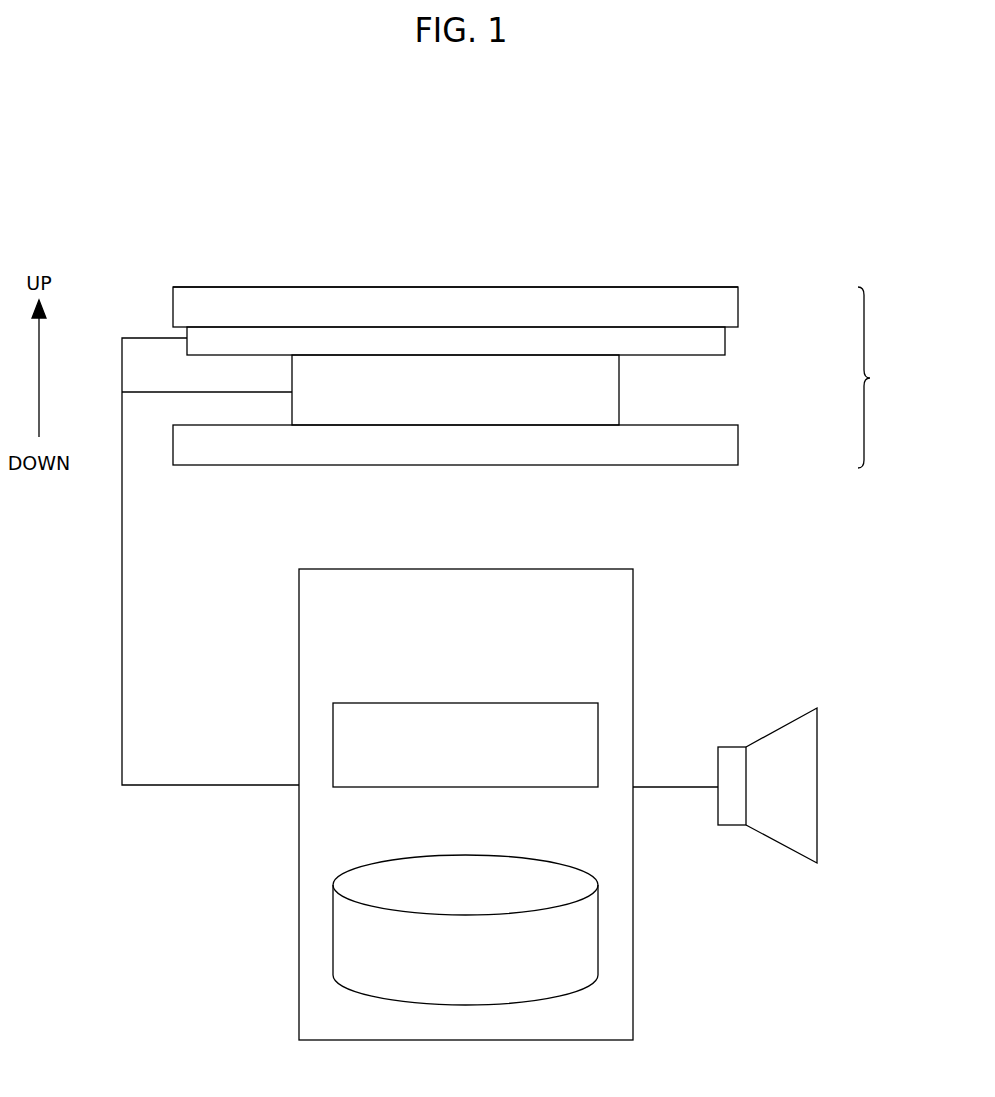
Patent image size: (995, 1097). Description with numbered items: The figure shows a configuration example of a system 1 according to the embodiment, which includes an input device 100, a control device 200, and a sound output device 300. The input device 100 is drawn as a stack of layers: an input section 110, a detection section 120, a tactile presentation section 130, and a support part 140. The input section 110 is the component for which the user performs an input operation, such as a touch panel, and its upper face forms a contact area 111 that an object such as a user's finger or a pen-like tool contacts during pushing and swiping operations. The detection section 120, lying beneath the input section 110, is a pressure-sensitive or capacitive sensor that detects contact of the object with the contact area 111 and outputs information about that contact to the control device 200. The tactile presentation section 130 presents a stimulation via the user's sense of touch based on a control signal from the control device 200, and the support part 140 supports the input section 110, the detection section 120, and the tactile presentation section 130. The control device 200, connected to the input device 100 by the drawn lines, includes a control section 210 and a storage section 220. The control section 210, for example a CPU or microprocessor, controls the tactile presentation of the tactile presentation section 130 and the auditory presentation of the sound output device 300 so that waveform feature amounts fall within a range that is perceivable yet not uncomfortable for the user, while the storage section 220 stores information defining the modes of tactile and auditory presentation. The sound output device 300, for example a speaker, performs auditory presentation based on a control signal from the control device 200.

The system 1 is at (855, 224).
The input device 100 is at (543, 353).
The input section 110 is at (738, 307).
The contact area 111 is at (662, 286).
The detection section 120 is at (725, 345).
The tactile presentation section 130 is at (619, 397).
The support part 140 is at (738, 447).
The control device 200 is at (633, 600).
The control section 210 is at (517, 703).
The storage section 220 is at (527, 858).
The sound output device 300 is at (812, 707).